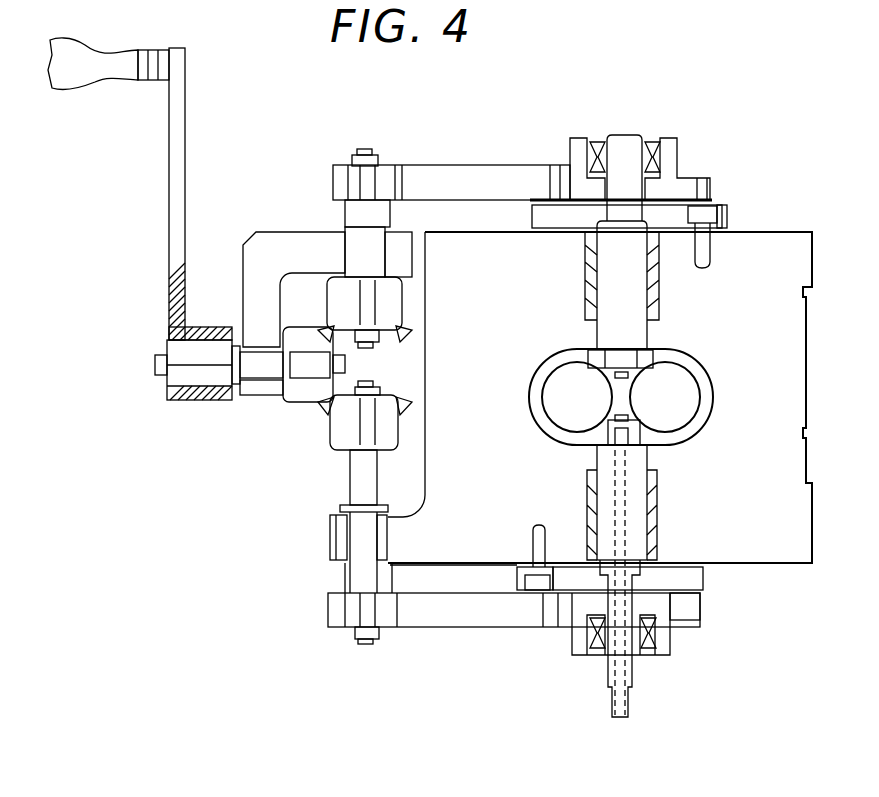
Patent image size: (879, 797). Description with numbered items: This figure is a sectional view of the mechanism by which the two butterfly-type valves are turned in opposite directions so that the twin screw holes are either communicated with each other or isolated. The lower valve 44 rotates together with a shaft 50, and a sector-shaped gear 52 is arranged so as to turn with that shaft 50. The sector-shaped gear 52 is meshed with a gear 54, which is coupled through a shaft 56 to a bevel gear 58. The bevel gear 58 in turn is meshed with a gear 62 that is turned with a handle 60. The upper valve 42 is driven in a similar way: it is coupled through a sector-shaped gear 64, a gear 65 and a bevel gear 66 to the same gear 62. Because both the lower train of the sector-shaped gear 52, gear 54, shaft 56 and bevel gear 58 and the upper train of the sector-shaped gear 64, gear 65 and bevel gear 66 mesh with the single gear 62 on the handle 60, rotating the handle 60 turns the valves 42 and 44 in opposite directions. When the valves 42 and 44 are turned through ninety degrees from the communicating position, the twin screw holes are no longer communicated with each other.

The valve 42 is at (612, 350).
The valve 44 is at (638, 433).
The shaft 50 is at (605, 457).
The sector-shaped gear 52 is at (452, 613).
The gear 54 is at (328, 612).
The shaft 56 is at (358, 473).
The bevel gear 58 is at (342, 422).
The handle 60 is at (178, 114).
The gear 62 is at (307, 390).
The sector-shaped gear 64 is at (437, 178).
The gear 65 is at (383, 173).
The bevel gear 66 is at (322, 333).